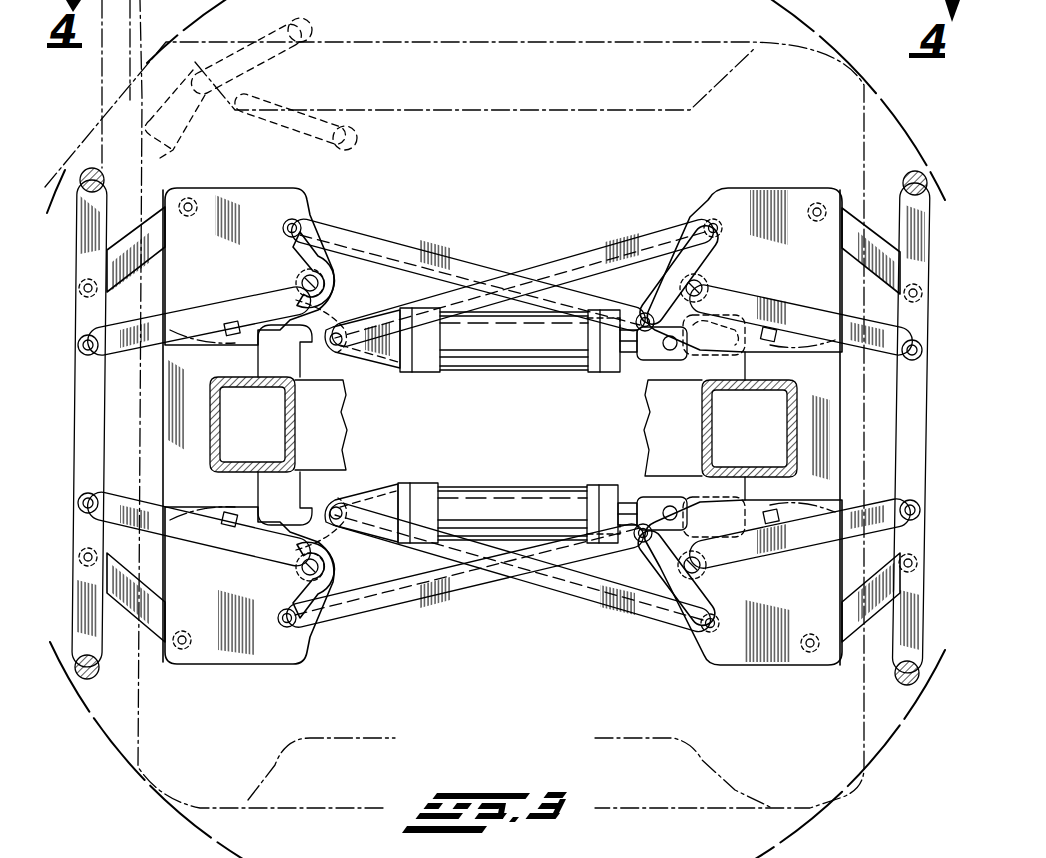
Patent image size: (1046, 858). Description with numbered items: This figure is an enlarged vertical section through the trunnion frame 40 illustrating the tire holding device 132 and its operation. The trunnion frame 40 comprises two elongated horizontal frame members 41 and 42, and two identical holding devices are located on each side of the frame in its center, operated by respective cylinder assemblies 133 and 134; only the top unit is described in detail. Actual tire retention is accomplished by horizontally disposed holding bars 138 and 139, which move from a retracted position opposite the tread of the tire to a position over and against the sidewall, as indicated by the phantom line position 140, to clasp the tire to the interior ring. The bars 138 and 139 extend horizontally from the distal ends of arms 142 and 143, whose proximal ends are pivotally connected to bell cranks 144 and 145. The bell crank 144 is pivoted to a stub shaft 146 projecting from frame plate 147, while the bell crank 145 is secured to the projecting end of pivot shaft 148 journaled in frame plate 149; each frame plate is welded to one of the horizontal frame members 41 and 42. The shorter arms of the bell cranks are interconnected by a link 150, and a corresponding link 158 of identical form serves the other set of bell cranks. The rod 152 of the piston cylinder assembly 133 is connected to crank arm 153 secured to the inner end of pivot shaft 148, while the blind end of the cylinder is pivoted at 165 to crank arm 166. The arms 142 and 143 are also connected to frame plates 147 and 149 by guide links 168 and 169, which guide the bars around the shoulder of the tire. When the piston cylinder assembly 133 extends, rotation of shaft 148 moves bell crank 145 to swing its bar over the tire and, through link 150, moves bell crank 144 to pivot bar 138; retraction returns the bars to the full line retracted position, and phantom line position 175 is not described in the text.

The trunnion frame 40 is at (803, 446).
The horizontal frame member 41 is at (295, 458).
The horizontal frame member 42 is at (700, 437).
The tire retaining or holding device 132 is at (514, 260).
The piston cylinder assembly 133 is at (538, 367).
The cylinder assembly 134 is at (497, 490).
The holding bar 138 is at (86, 168).
The holding bar 139 is at (904, 178).
The phantom line position 140 is at (316, 21).
The arm 142 is at (76, 336).
The arm 143 is at (926, 306).
The bell crank 144 is at (190, 310).
The bell crank 145 is at (798, 313).
The stub shaft 146 is at (292, 270).
The frame plate 147 is at (173, 413).
The pivot shaft 148 is at (668, 286).
The frame plate 149 is at (825, 383).
The link 150 is at (422, 257).
The rod 152 is at (633, 360).
The crank arm 153 is at (714, 348).
The link 158 is at (650, 243).
The pivot 165 is at (350, 366).
The crank arm 166 is at (285, 351).
The guide link 168 is at (153, 318).
The guide link 169 is at (855, 240).
The phantom link pivot 175 is at (359, 136).